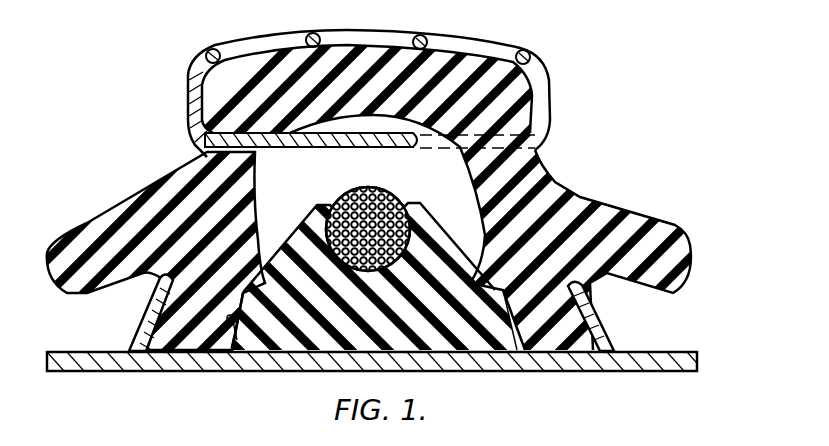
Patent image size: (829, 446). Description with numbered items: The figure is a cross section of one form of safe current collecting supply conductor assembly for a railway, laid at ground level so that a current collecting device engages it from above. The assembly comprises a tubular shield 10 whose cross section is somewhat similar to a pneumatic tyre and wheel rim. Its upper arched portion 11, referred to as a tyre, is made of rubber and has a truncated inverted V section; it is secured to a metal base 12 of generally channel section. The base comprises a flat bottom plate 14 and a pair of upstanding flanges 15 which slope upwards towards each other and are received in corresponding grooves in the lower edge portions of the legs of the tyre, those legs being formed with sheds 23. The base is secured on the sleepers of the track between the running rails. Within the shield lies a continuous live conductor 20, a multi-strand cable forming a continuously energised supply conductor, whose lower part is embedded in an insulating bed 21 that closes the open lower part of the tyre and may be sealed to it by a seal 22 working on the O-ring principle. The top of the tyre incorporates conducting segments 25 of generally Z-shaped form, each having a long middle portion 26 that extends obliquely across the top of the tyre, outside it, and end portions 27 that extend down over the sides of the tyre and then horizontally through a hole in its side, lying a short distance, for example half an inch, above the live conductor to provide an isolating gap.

The tubular shield 10 is at (556, 146).
The upper arched portion 11 is at (492, 76).
The metal base 12 is at (663, 346).
The flat bottom plate 14 is at (648, 371).
The upstanding flanges 15 is at (597, 340).
The live conductor 20 is at (403, 207).
The insulating bed 21 is at (300, 318).
The seal 22 is at (535, 358).
The sheds 23 is at (652, 240).
The conducting segments 25 is at (556, 65).
The long middle portion 26 is at (426, 36).
The end portions 27 is at (334, 152).